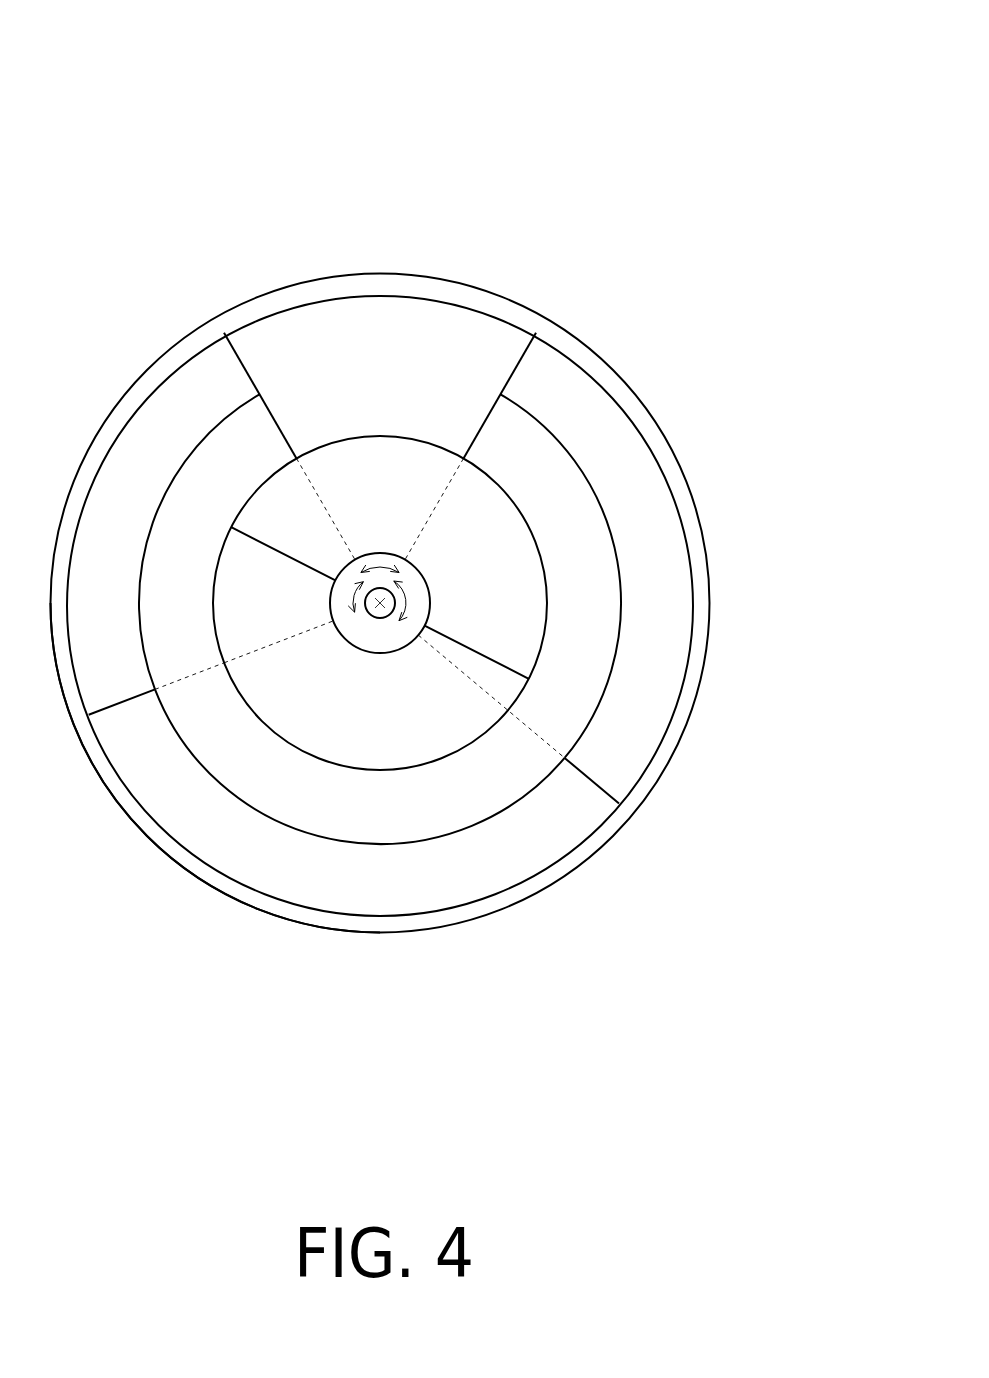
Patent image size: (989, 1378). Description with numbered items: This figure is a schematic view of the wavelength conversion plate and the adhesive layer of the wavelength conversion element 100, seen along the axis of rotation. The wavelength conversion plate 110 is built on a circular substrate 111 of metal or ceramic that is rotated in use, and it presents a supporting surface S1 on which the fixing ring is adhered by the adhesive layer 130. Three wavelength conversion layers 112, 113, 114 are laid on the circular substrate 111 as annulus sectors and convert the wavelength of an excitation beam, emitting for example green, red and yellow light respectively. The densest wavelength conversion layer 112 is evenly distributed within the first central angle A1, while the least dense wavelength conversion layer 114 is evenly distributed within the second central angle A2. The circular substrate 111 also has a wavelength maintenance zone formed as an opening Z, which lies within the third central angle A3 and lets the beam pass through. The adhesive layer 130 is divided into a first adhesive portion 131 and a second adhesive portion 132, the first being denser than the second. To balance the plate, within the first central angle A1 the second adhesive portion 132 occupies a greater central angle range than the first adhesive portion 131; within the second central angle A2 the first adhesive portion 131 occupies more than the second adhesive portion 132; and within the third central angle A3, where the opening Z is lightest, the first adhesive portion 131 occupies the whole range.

The wavelength conversion element 100 is at (77, 49).
The wavelength conversion plate 110 is at (655, 790).
The circular substrate 111 is at (607, 828).
The wavelength conversion layer 112 is at (172, 408).
The wavelength conversion layer 113 is at (483, 863).
The wavelength conversion layer 114 is at (662, 624).
The adhesive layer 130 is at (520, 611).
The first adhesive portion 131 is at (548, 625).
The second adhesive portion 132 is at (518, 698).
The first central angle A1 is at (352, 594).
The second central angle A2 is at (407, 597).
The third central angle A3 is at (378, 553).
The supporting surface S1 is at (166, 589).
The opening Z is at (260, 311).